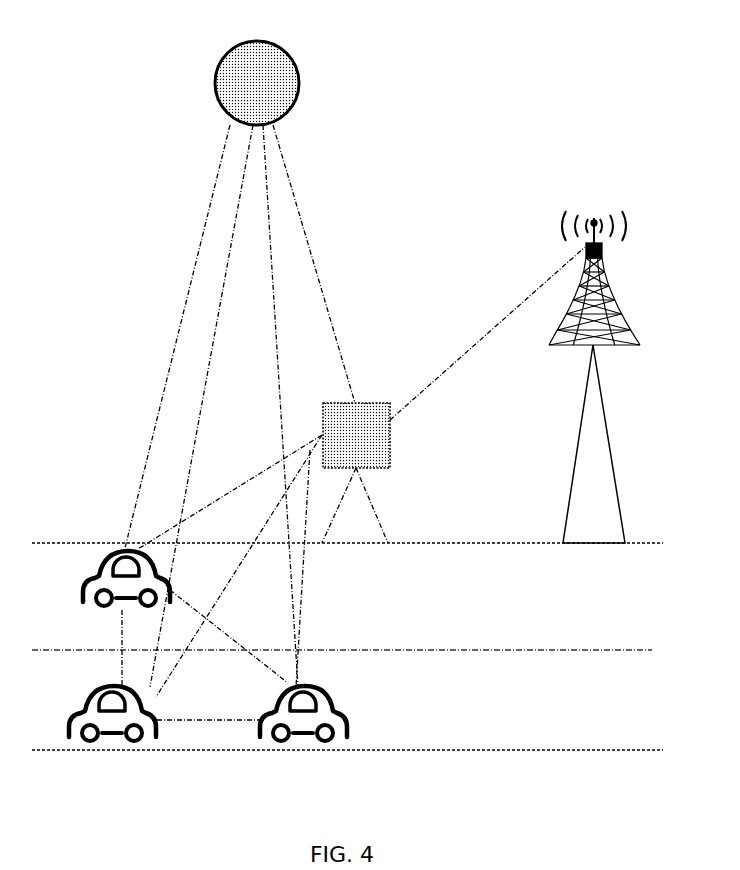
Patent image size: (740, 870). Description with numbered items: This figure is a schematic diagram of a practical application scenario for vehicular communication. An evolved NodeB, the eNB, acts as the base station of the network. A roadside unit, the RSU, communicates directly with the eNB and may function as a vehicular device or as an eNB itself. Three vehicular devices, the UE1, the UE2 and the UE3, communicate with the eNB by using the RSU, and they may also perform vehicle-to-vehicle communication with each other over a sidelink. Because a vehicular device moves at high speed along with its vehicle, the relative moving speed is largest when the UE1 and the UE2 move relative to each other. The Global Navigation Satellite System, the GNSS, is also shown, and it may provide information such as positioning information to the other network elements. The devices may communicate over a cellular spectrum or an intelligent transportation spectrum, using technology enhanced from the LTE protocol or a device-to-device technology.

The Global Navigation Satellite System GNSS is at (239, 349).
The evolved NodeB eNB is at (515, 363).
The roadside unit RSU is at (273, 530).
The first user equipment UE1 is at (164, 737).
The second user equipment UE2 is at (303, 737).
The third user equipment UE3 is at (161, 619).